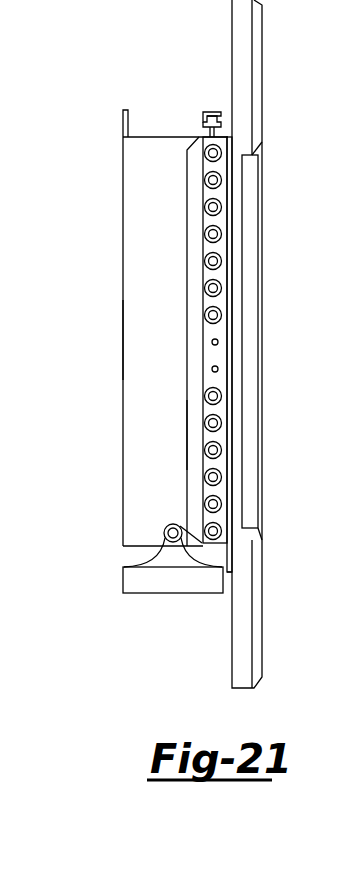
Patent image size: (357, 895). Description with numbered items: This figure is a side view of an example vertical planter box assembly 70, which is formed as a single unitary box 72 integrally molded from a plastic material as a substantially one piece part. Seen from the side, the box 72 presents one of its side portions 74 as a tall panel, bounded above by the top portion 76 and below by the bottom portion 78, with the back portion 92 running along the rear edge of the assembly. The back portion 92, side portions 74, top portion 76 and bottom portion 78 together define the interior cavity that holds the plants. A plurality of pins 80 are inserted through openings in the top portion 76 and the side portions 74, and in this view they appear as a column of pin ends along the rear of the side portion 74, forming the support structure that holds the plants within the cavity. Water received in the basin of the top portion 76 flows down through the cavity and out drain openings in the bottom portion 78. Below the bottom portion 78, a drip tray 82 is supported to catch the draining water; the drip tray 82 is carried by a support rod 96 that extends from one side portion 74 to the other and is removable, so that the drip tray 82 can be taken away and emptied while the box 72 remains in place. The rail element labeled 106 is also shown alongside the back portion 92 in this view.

The vertical planter box assembly 70 is at (121, 63).
The box 72 is at (99, 436).
The side portions 74 is at (148, 196).
The top portion 76 is at (178, 110).
The bottom portion 78 is at (127, 551).
The pins 80 is at (214, 261).
The drip tray 82 is at (143, 583).
The back portion 92 is at (121, 338).
The support rod 96 is at (173, 542).
The rail 106 is at (242, 50).